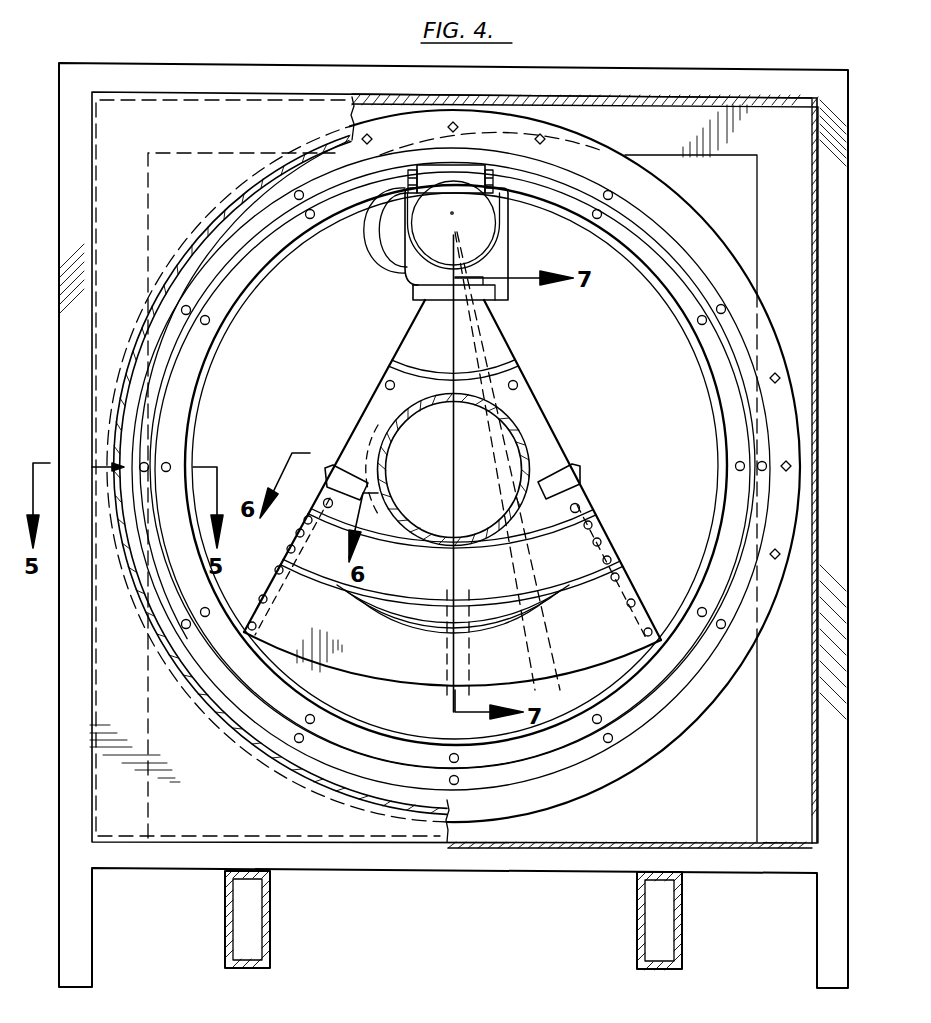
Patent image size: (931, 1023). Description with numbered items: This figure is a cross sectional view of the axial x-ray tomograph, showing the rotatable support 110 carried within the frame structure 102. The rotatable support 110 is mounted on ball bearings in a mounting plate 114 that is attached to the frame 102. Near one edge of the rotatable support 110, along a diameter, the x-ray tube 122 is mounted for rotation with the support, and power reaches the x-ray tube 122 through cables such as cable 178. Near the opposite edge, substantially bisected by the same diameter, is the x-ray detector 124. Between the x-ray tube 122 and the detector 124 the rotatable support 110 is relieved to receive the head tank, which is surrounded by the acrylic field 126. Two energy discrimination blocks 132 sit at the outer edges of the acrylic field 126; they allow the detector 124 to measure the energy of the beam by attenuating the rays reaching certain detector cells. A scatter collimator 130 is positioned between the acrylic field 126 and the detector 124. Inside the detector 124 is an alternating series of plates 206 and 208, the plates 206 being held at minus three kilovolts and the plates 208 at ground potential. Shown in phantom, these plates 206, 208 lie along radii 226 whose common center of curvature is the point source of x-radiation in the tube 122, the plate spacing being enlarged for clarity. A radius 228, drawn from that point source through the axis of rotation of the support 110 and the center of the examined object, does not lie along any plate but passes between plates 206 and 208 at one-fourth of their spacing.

The frame structure 102 is at (616, 78).
The rotatable support 110 is at (247, 742).
The mounting plate 114 is at (688, 218).
The x-ray tube 122 is at (433, 237).
The cable 178 is at (373, 229).
The x-ray detector 124 is at (632, 594).
The acrylic field 126 is at (528, 394).
The scatter collimator 130 is at (597, 540).
The energy discrimination block 132 is at (338, 477).
The radius 226 is at (506, 433).
The radius 228 is at (460, 511).
The reference plate 206 is at (552, 637).
The reference plate 208 is at (527, 634).